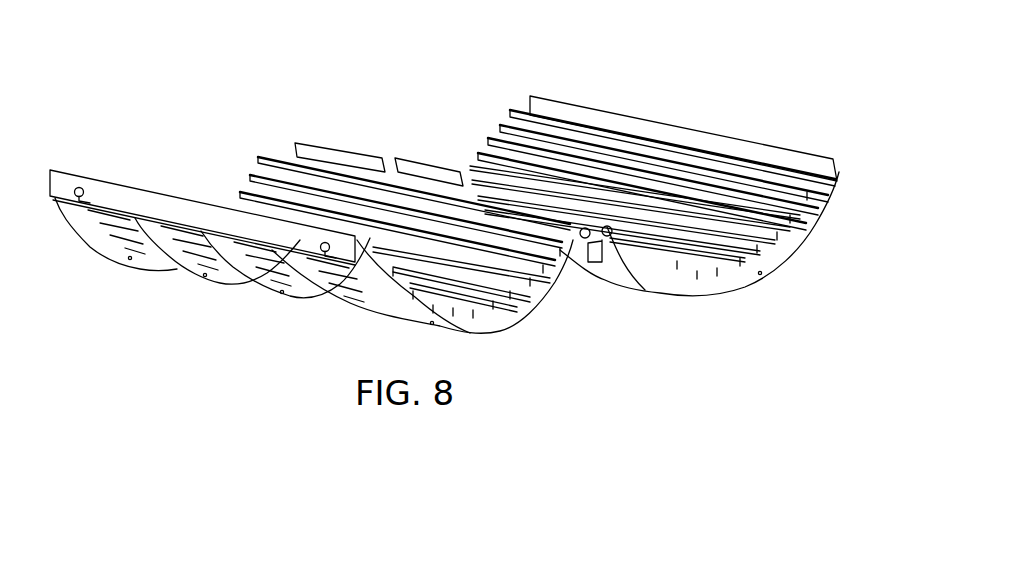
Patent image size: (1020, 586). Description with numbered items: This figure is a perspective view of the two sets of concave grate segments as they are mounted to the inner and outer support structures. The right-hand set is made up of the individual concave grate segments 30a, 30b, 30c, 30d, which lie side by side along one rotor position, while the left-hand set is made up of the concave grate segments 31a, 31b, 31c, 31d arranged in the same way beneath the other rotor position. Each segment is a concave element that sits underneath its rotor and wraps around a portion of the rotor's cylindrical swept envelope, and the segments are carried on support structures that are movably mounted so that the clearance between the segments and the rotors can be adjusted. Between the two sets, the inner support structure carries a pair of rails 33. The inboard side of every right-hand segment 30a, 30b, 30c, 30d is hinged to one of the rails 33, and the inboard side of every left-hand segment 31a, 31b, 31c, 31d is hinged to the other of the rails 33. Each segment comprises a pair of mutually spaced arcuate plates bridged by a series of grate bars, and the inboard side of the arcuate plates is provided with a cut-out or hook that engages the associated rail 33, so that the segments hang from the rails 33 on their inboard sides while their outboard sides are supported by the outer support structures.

The right-hand concave grate segment 30a is at (797, 187).
The right-hand concave grate segment 30b is at (717, 197).
The right-hand concave grate segment 30c is at (631, 192).
The right-hand concave grate segment 30d is at (547, 118).
The left-hand concave grate segment 31a is at (347, 287).
The left-hand concave grate segment 31b is at (282, 280).
The left-hand concave grate segment 31c is at (208, 257).
The left-hand concave grate segment 31d is at (120, 237).
The rails 33 is at (588, 262).